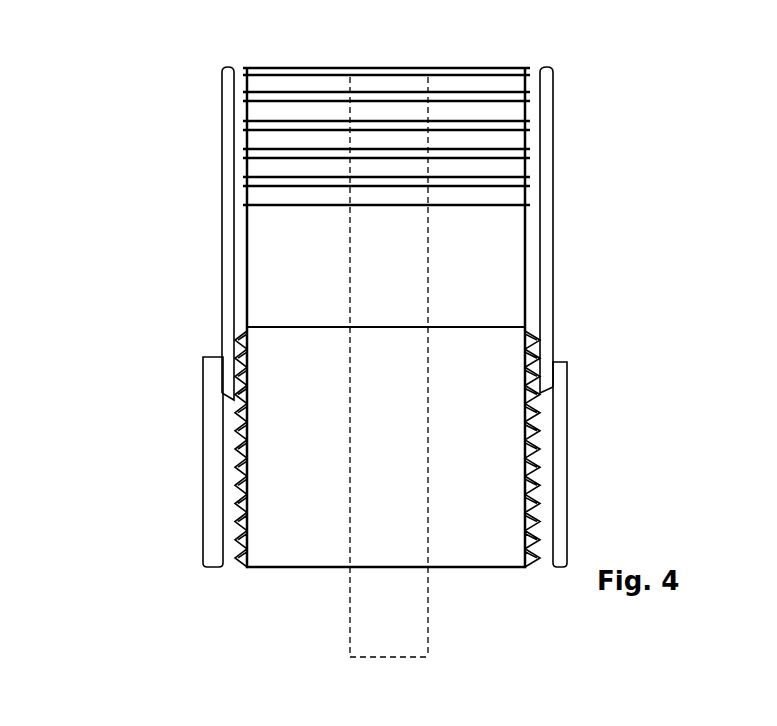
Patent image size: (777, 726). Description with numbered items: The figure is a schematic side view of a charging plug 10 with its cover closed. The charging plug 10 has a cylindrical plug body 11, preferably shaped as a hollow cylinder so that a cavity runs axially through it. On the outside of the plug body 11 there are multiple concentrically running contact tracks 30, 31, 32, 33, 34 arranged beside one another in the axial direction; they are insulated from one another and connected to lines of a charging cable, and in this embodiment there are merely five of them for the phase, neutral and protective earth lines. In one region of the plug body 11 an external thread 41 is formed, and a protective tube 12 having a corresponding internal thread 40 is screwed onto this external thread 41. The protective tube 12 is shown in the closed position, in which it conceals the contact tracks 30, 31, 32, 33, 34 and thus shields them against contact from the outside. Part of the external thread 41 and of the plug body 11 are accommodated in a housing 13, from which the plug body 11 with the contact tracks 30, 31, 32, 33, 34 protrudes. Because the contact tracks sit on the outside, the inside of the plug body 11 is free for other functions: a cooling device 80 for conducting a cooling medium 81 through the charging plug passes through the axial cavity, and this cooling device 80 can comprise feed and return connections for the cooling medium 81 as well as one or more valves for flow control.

The charging plug 10 is at (150, 208).
The plug body 11 is at (265, 265).
The protective tube 12 is at (222, 90).
The housing 13 is at (567, 410).
The contact track 30 is at (555, 72).
The contact track 31 is at (540, 112).
The contact track 32 is at (540, 140).
The contact track 33 is at (540, 167).
The contact track 34 is at (540, 198).
The internal thread 40 is at (250, 365).
The external thread 41 is at (253, 468).
The cooling device 80 is at (349, 623).
The cooling medium 81 is at (413, 256).